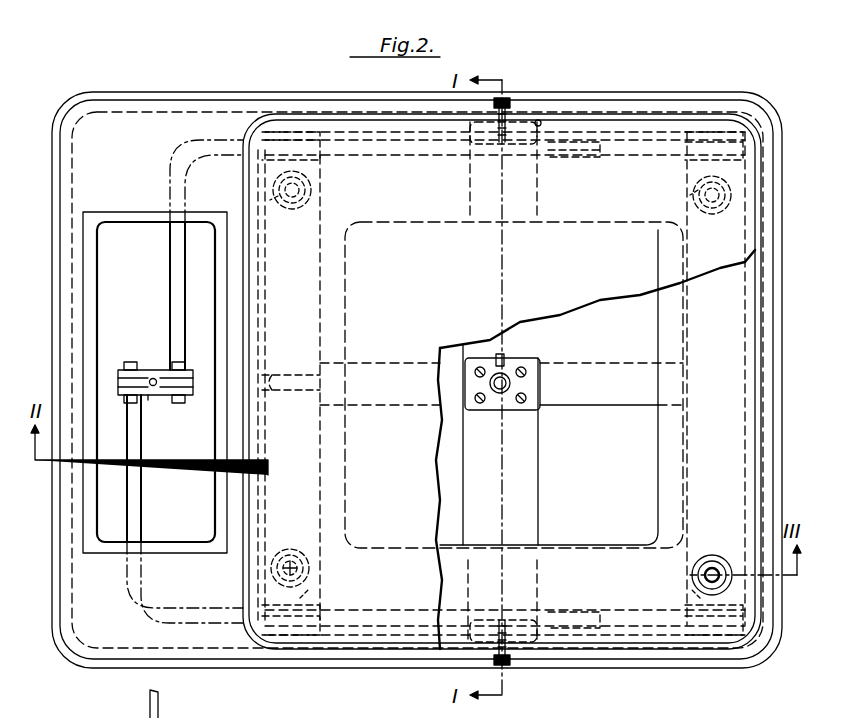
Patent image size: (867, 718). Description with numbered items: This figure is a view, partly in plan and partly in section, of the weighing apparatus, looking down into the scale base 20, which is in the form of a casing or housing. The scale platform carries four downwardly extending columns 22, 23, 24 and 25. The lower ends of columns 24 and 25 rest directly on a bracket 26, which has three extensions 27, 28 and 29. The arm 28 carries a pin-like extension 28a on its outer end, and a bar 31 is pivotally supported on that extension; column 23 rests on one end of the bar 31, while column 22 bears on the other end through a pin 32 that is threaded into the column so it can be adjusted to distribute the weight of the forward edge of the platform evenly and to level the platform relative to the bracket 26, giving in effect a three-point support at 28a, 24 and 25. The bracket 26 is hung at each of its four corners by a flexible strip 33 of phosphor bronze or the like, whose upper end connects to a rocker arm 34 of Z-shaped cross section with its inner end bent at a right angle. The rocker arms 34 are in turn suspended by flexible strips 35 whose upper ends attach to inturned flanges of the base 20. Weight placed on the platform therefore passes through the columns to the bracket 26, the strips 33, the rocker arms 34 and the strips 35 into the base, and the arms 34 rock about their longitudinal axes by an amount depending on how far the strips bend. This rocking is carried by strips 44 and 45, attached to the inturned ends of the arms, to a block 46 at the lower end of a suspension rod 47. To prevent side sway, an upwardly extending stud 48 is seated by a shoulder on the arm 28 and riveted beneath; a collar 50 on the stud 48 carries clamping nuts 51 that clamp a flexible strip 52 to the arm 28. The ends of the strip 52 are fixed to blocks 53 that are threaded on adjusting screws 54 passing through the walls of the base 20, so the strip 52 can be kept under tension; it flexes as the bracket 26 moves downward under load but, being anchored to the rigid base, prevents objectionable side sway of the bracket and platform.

The scale base 20 is at (632, 665).
The column 22 is at (290, 560).
The column 23 is at (312, 190).
The column 24 is at (695, 198).
The column 25 is at (712, 565).
The bracket 26 is at (757, 380).
The extension 27 is at (368, 665).
The arm 28 is at (612, 410).
The pin-like extension 28a is at (287, 375).
The extension 29 is at (683, 488).
The bar 31 is at (320, 283).
The pin 32 is at (312, 568).
The flexible strip 33 is at (695, 598).
The rocker arm 34 is at (585, 612).
The flexible strip 35 is at (712, 633).
The strip 44 is at (176, 405).
The strip 45 is at (128, 375).
The block 46 is at (150, 398).
The suspension rod 47 is at (153, 378).
The stud 48 is at (508, 383).
The collar 50 is at (500, 395).
The clamping nut 51 is at (540, 360).
The flexible strip 52 is at (530, 473).
The block 53 is at (470, 645).
The adjusting screw 54 is at (510, 662).